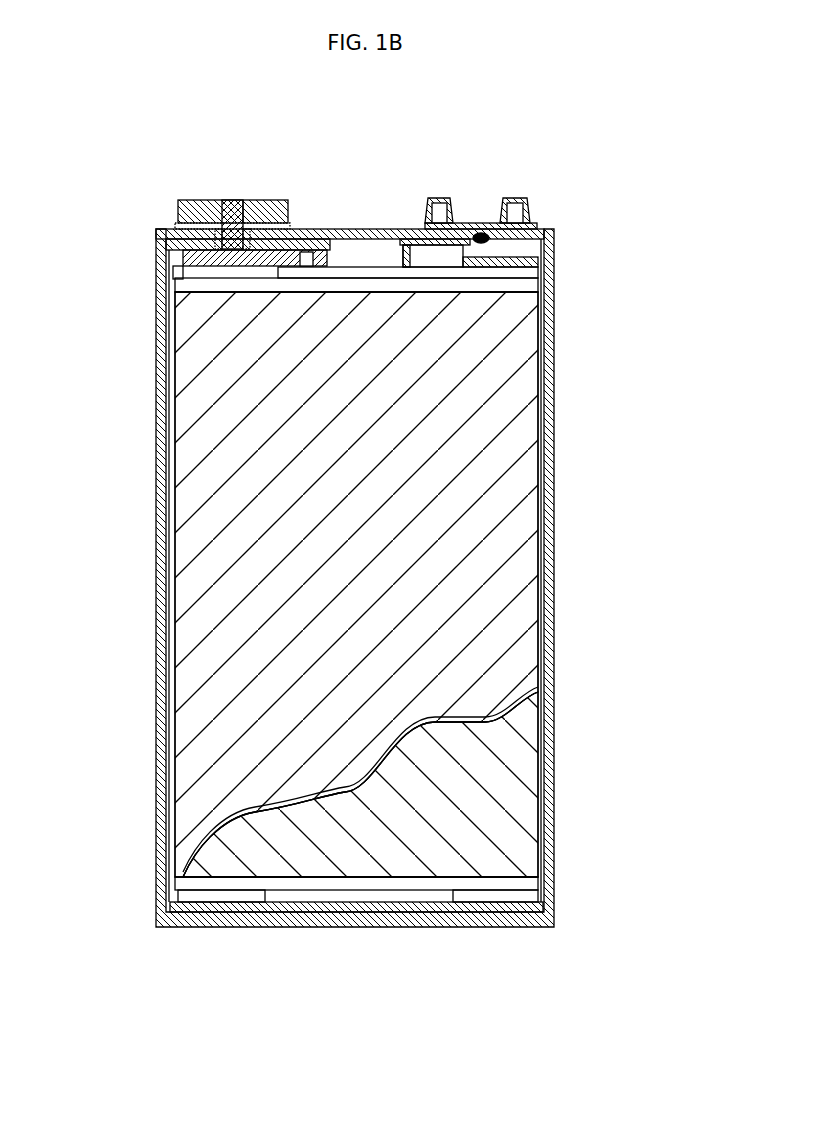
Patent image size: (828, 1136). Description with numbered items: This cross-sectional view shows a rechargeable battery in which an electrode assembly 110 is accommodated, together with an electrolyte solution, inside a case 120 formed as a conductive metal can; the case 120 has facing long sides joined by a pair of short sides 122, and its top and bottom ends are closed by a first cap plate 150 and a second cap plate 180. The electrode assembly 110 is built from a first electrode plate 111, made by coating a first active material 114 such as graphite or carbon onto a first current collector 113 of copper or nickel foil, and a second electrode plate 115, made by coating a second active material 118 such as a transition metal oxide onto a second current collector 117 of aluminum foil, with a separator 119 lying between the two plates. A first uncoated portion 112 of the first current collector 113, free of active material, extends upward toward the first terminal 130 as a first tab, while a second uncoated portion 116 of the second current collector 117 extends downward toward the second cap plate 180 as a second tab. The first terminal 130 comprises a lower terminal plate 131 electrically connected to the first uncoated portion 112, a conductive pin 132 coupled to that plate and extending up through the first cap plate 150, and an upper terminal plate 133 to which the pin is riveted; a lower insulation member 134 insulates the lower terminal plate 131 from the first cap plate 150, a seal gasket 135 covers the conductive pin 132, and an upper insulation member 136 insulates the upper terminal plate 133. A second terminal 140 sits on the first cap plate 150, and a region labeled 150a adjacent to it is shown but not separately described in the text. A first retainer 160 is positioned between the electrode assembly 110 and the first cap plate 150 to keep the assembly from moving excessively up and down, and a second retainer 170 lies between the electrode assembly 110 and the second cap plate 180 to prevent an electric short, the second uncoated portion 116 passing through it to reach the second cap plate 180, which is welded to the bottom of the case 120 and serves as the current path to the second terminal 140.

The electrode assembly 110 is at (422, 593).
The first electrode plate 111 is at (522, 367).
The first uncoated portion 112 is at (306, 229).
The first current collector 113 is at (522, 284).
The first active material 114 is at (513, 392).
The second electrode plate 115 is at (510, 779).
The second uncoated portion 116 is at (335, 897).
The second current collector 117 is at (528, 885).
The second active material 118 is at (518, 813).
The separator 119 is at (520, 272).
The case 120 is at (561, 487).
The short sides 122 is at (548, 540).
The first terminal 130 is at (194, 212).
The lower terminal plate 131 is at (230, 264).
The conductive pin 132 is at (231, 200).
The upper terminal plate 133 is at (260, 200).
The lower insulation member 134 is at (210, 244).
The seal gasket 135 is at (178, 226).
The upper insulation member 136 is at (178, 213).
The second terminal 140 is at (514, 185).
The first cap plate 150 is at (404, 242).
The second terminal connecting portion 150a is at (368, 229).
The first retainer 160 is at (516, 262).
The second retainer 170 is at (206, 907).
The second cap plate 180 is at (427, 918).